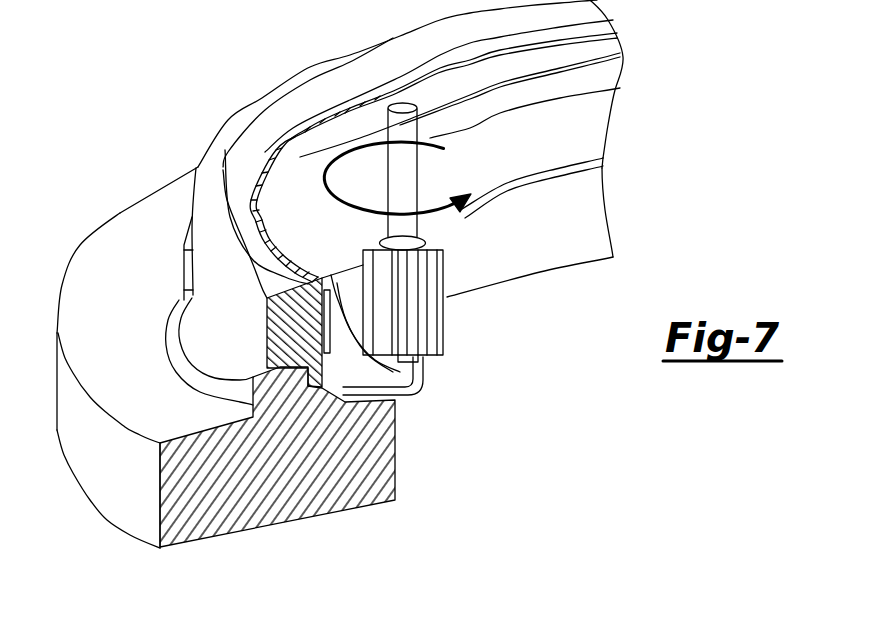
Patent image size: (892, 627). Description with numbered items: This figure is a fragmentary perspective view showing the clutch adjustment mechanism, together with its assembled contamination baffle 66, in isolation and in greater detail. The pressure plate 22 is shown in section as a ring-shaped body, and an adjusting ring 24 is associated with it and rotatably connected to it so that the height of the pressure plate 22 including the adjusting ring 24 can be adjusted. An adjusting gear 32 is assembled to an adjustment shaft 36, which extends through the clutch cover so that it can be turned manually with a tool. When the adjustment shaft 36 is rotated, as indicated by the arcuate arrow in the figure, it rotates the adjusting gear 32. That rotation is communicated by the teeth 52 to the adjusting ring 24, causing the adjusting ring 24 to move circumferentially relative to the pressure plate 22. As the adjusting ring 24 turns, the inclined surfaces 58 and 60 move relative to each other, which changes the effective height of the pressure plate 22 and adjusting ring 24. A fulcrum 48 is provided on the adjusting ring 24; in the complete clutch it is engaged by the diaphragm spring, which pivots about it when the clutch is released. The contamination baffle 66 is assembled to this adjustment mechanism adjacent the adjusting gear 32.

The pressure plate 22 is at (113, 493).
The adjusting ring 24 is at (205, 278).
The adjusting gear 32 is at (440, 315).
The adjustment shaft 36 is at (417, 173).
The fulcrum 48 is at (223, 167).
The teeth 52 is at (287, 140).
The inclined surface 58 is at (213, 340).
The inclined surface 60 is at (278, 380).
The contamination baffle 66 is at (393, 377).